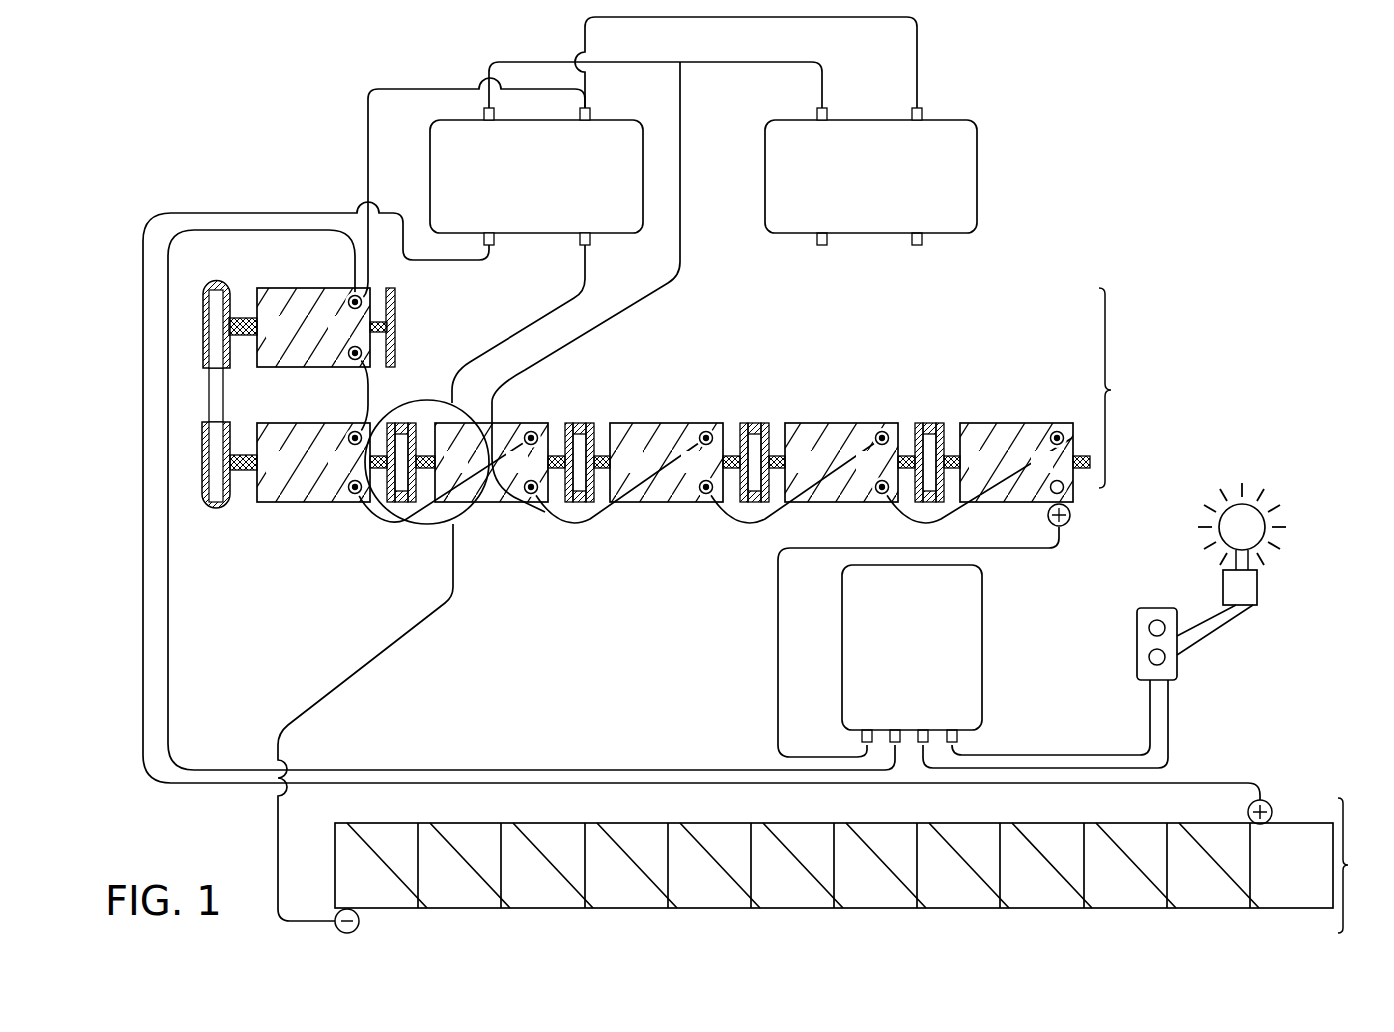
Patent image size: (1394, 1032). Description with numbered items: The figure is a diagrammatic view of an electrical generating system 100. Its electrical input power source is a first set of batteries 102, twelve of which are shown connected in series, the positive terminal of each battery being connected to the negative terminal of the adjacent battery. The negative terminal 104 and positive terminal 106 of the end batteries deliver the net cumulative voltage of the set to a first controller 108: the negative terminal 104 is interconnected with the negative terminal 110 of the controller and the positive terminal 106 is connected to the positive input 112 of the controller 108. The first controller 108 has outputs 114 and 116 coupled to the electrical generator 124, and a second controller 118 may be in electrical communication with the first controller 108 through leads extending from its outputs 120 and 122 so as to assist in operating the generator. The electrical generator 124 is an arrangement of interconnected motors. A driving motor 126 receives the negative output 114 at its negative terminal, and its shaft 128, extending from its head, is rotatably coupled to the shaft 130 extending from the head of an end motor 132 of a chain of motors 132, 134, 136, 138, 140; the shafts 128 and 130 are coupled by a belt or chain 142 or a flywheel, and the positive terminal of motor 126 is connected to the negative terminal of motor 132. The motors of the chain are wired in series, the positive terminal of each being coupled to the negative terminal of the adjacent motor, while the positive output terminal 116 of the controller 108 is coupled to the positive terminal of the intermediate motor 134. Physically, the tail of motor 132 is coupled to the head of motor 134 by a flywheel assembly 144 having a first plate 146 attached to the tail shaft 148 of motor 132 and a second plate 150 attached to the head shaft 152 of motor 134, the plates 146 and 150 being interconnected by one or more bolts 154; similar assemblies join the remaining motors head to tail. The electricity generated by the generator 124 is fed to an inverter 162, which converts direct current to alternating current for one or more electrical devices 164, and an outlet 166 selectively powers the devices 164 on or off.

The electrical generating system 100 is at (1210, 168).
The batteries 102 is at (1370, 853).
The negative terminal 104 is at (336, 912).
The positive terminal 106 is at (1270, 800).
The first controller 108 is at (430, 178).
The negative terminal 110 is at (592, 240).
The positive input 112 is at (497, 240).
The negative output 114 is at (578, 113).
The positive output terminal 116 is at (482, 113).
The second controller 118 is at (978, 176).
The output 120 is at (925, 112).
The output 122 is at (830, 112).
The electrical generator 124 is at (1111, 390).
The driving motor 126 is at (312, 297).
The shaft 128 is at (247, 318).
The shaft 130 is at (245, 473).
The end motor 132 is at (307, 494).
The motor 134 is at (500, 496).
The motor 136 is at (666, 432).
The motor 138 is at (842, 432).
The motor 140 is at (1018, 432).
The belt or chain 142 is at (203, 352).
The flywheel assembly 144 is at (417, 494).
The first plate 146 is at (391, 505).
The tail shaft 148 is at (379, 472).
The second plate 150 is at (414, 505).
The head shaft 152 is at (440, 522).
The bolts 154 is at (401, 504).
The inverter 162 is at (982, 650).
The electrical devices 164 is at (1258, 592).
The outlet 166 is at (1180, 668).